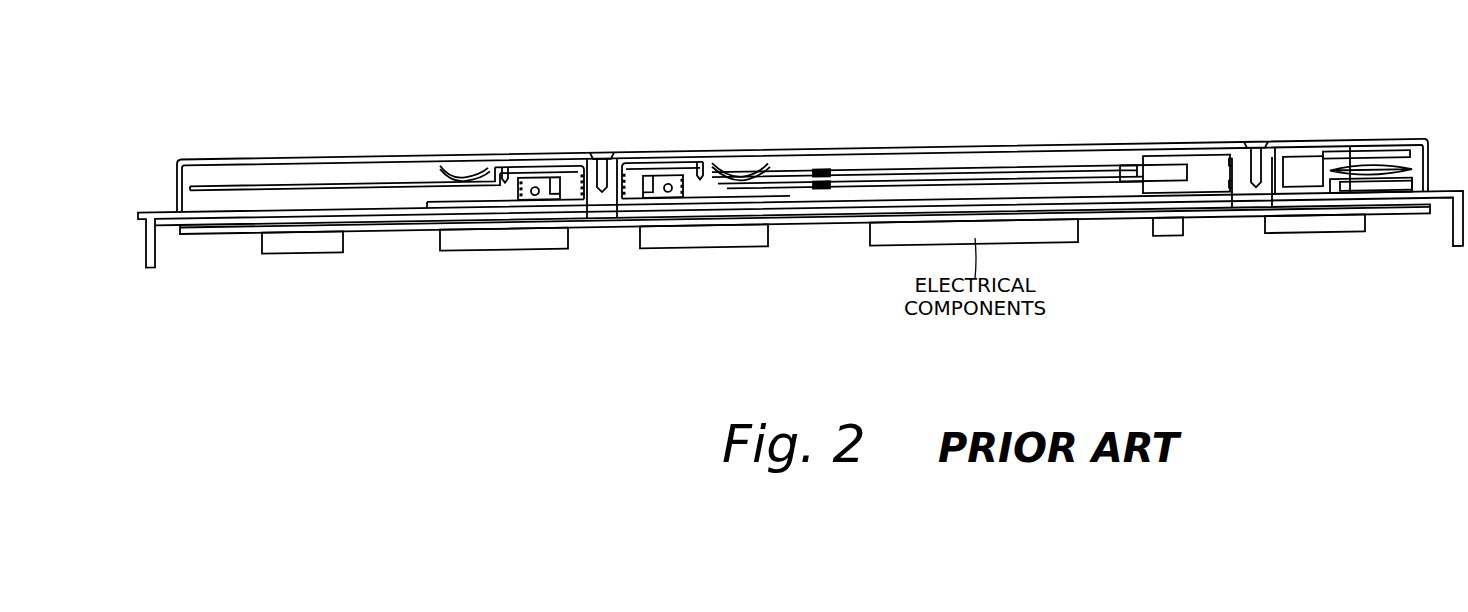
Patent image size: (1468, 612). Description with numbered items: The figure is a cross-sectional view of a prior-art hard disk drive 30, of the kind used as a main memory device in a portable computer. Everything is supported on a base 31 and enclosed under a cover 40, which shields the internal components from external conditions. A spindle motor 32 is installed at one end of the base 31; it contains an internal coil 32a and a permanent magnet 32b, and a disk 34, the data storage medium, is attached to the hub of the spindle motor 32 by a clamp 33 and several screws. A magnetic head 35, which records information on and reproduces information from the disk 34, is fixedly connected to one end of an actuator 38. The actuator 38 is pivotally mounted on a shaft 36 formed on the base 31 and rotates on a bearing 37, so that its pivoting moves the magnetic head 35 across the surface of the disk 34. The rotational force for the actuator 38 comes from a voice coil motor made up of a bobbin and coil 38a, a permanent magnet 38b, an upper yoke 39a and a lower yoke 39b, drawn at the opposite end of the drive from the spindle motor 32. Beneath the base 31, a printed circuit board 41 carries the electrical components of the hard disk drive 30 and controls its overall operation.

The hard disk drive 30 is at (222, 138).
The base 31 is at (155, 250).
The spindle motor 32 is at (553, 166).
The internal coil 32a is at (537, 196).
The permanent magnet 32b is at (680, 190).
The clamp 33 is at (470, 170).
The disk 34 is at (381, 183).
The magnetic head 35 is at (823, 170).
The shaft 36 is at (1245, 202).
The bearing 37 is at (1248, 150).
The actuator 38 is at (1175, 155).
The bobbin and coil 38a is at (1352, 163).
The permanent magnet 38b is at (1378, 188).
The upper yoke 39a is at (1412, 148).
The lower yoke 39b is at (1410, 186).
The cover 40 is at (335, 157).
The printed circuit board 41 is at (415, 226).